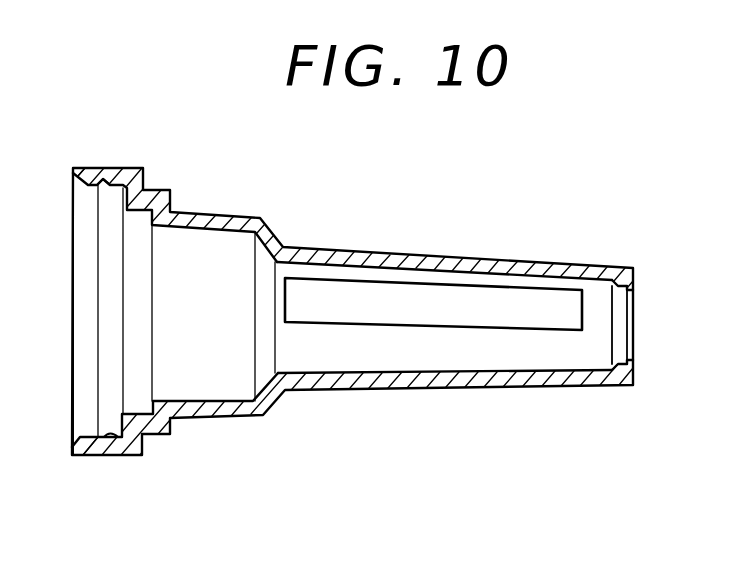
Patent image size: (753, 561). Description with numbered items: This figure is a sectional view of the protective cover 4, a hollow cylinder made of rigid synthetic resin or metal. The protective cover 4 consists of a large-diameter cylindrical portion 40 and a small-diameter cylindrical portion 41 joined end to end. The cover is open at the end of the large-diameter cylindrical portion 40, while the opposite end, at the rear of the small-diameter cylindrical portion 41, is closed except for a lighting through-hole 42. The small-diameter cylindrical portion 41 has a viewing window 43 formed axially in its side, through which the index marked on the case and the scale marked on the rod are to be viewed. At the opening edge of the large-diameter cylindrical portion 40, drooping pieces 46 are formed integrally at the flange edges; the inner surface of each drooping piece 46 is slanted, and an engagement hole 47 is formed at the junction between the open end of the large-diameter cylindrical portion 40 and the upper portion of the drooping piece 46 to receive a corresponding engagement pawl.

The protective cover 4 is at (465, 390).
The large-diameter cylindrical portion 40 is at (203, 418).
The small-diameter cylindrical portion 41 is at (560, 388).
The lighting through-hole 42 is at (633, 347).
The viewing window 43 is at (570, 292).
The drooping pieces 46 is at (92, 170).
The engagement hole 47 is at (104, 181).